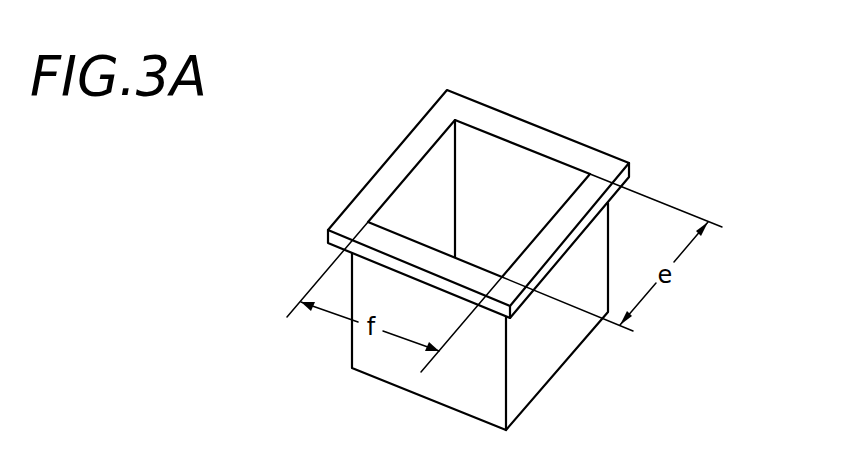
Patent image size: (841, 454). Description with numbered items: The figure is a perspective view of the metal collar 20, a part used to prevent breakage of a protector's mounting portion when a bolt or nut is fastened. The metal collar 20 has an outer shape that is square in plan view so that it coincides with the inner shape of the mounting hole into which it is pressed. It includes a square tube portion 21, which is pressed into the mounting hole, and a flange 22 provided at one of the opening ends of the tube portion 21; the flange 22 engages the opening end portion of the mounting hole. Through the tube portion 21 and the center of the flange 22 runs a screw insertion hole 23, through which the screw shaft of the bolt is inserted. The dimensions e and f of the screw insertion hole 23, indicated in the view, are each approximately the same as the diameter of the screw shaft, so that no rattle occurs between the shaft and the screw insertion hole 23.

The metal collar 20 is at (559, 109).
The tube portion 21 is at (527, 370).
The flange 22 is at (393, 168).
The screw insertion hole 23 is at (507, 178).